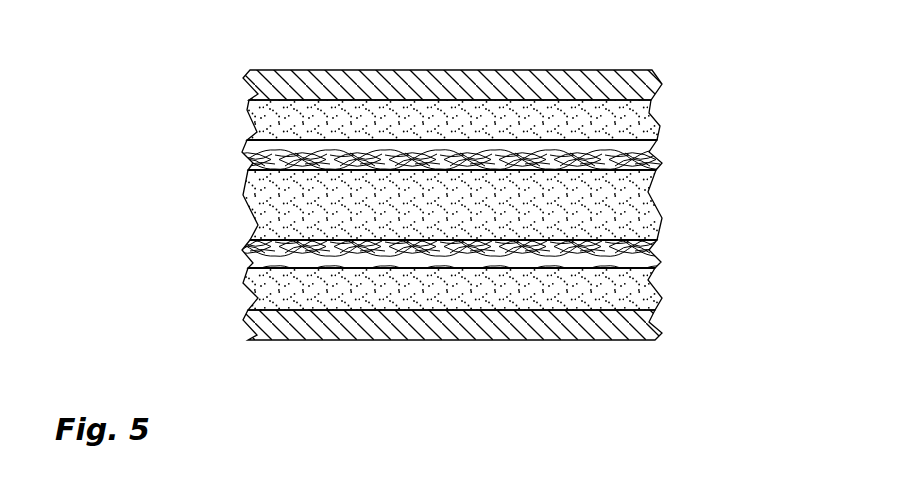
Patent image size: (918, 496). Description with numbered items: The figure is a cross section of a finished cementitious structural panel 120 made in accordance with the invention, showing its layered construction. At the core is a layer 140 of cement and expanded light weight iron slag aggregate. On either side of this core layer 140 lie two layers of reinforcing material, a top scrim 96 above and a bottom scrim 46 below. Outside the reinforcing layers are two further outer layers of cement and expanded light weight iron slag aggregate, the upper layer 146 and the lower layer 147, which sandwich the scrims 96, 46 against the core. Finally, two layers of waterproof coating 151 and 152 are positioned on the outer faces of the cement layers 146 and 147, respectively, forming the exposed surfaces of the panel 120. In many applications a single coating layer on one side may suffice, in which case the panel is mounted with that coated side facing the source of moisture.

The finished cementitious structural panel 120 is at (184, 153).
The waterproof coating layer 151 is at (663, 85).
The outer layer of cement and expanded light weight iron slag aggregate 146 is at (658, 123).
The top scrim 96 is at (660, 160).
The layer of cement and expanded light weight iron slag aggregate 140 is at (657, 215).
The bottom scrim 46 is at (660, 260).
The outer layer of cement and expanded light weight iron slag aggregate 147 is at (657, 298).
The waterproof coating layer 152 is at (660, 332).